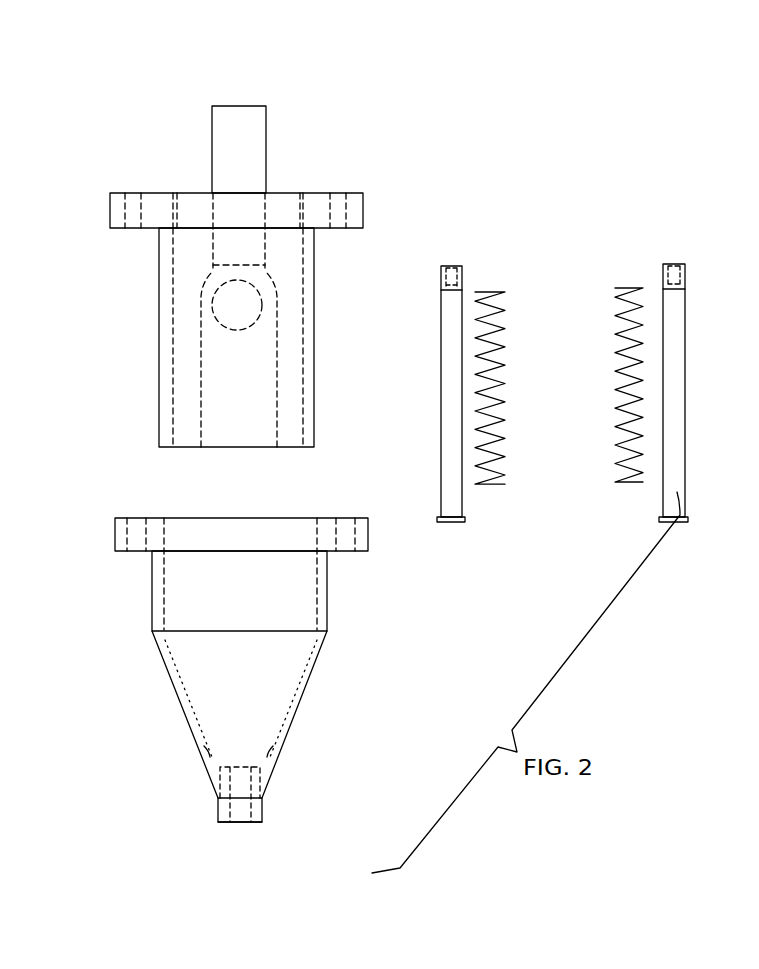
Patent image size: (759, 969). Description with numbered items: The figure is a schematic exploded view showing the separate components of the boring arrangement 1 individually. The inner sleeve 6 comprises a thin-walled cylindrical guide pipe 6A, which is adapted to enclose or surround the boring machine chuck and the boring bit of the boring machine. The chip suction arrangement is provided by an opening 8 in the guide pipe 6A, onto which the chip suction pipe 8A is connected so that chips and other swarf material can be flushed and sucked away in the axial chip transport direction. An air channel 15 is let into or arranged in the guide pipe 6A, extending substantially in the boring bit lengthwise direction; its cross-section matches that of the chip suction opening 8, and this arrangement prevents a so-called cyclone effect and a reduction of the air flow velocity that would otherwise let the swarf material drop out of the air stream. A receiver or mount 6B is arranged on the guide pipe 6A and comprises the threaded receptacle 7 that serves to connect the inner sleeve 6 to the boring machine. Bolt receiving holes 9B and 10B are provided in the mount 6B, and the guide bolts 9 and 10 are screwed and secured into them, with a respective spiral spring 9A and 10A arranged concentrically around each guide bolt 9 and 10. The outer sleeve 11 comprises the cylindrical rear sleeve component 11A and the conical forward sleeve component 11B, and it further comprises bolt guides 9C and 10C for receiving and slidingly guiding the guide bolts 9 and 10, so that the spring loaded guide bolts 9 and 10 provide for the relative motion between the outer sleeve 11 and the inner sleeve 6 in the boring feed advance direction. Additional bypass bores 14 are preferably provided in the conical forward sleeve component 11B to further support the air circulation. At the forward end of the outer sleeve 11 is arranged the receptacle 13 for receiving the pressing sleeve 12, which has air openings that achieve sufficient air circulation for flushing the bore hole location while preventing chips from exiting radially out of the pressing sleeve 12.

The boring arrangement 1 is at (197, 95).
The inner sleeve 6 is at (192, 337).
The guide pipe 6A is at (167, 345).
The mount 6B is at (187, 200).
The threaded receptacle 7 is at (303, 193).
The chip suction opening 8 is at (230, 317).
The chip suction pipe 8A is at (243, 148).
The guide bolt 9 is at (455, 511).
The spiral spring 9A is at (500, 477).
The bolt receiving hole 9B is at (132, 212).
The bolt guide 9C is at (133, 533).
The guide bolt 10 is at (672, 306).
The spiral spring 10A is at (627, 304).
The bolt receiving hole 10B is at (343, 220).
The bolt guide 10C is at (352, 533).
The outer sleeve 11 is at (235, 701).
The cylindrical rear sleeve component 11A is at (200, 600).
The conical forward sleeve component 11B is at (212, 678).
The pressing sleeve 12 is at (220, 822).
The receptacle 13 is at (265, 800).
The bypass bores 14 is at (201, 754).
The air channel 15 is at (252, 355).